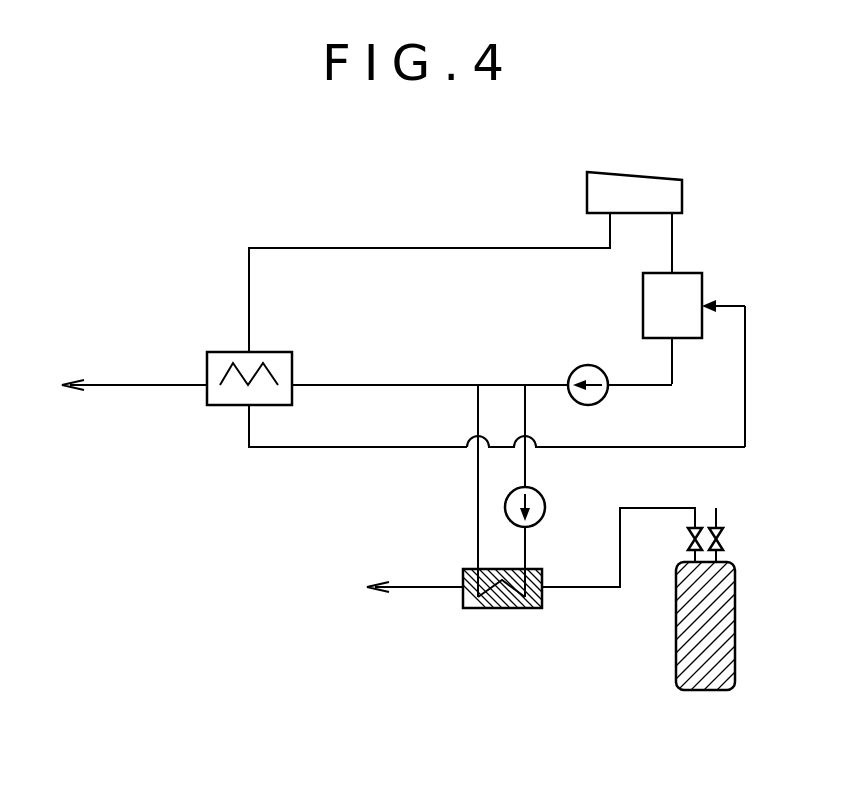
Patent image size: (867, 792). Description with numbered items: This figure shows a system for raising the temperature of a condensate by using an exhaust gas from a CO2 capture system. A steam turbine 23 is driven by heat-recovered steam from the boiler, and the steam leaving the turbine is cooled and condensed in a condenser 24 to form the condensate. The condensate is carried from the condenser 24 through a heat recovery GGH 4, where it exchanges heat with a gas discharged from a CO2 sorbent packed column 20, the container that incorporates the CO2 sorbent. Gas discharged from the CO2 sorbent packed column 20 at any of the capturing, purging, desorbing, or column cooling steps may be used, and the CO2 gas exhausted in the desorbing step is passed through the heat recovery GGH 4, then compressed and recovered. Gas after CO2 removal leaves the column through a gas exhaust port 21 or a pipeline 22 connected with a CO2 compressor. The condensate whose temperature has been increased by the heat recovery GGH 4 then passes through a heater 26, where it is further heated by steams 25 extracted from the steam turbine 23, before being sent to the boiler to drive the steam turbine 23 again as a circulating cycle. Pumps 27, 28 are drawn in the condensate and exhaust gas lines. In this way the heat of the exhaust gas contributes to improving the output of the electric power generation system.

The heat recovery GGH 4 is at (503, 609).
The CO2 sorbent packed column 20 is at (675, 628).
The gas exhaust port 21 is at (686, 553).
The pipeline connected with a CO2 compressor 22 is at (718, 516).
The steam turbine 23 is at (683, 190).
The condenser 24 is at (703, 278).
The steams extracted from the steam turbine 25 is at (455, 250).
The heater 26 is at (293, 358).
The pump 27 is at (588, 364).
The pump 28 is at (546, 508).